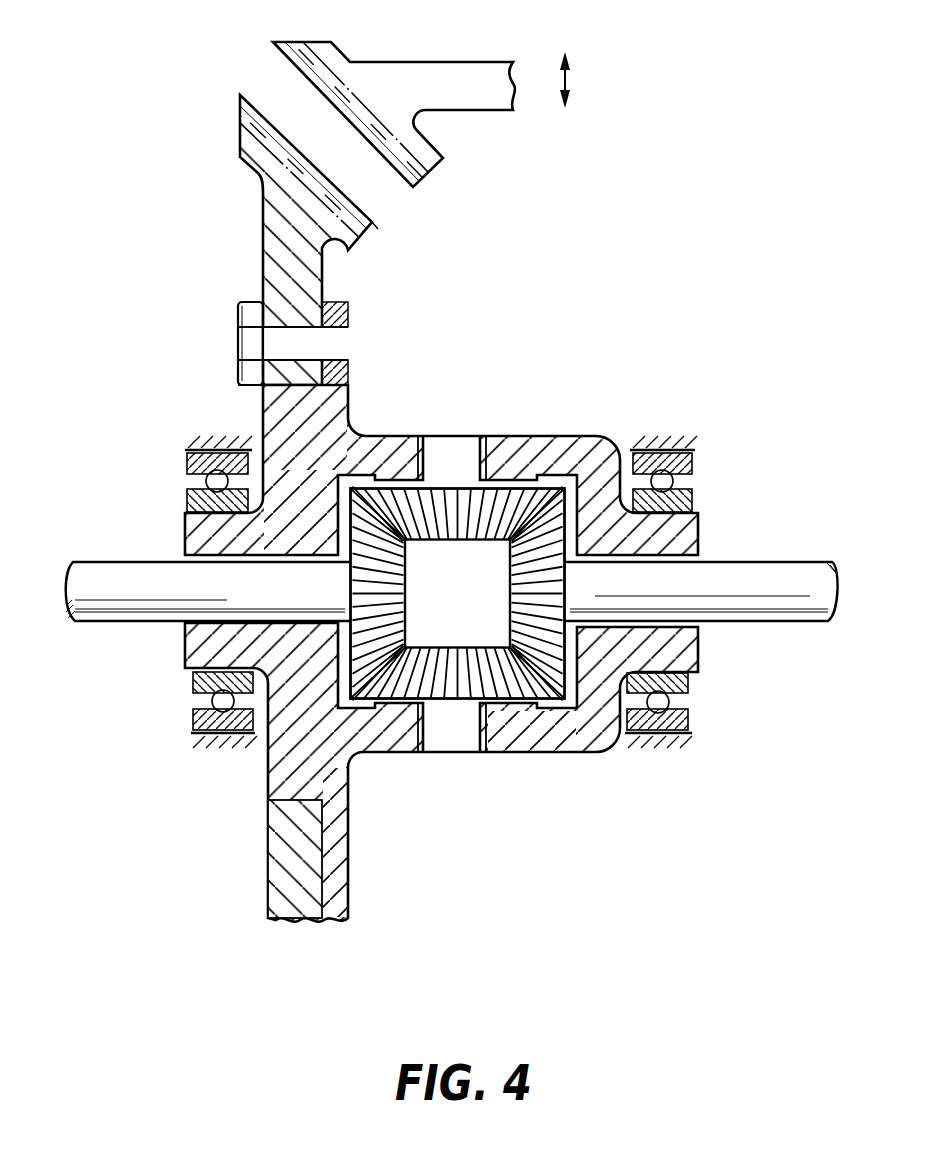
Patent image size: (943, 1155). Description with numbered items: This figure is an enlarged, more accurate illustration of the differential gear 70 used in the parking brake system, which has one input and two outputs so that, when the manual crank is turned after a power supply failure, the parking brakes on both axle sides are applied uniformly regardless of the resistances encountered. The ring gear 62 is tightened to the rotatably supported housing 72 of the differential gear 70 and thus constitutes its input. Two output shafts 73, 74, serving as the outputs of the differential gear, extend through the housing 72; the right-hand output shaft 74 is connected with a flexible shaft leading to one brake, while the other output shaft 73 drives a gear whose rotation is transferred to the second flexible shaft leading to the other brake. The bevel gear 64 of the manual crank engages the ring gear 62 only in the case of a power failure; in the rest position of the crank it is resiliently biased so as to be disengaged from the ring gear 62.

The ring gear 62 is at (343, 232).
The bevel gear 64 is at (423, 157).
The differential gear 70 is at (523, 771).
The housing 72 is at (525, 441).
The output shaft 73 is at (129, 592).
The output shaft 74 is at (777, 592).